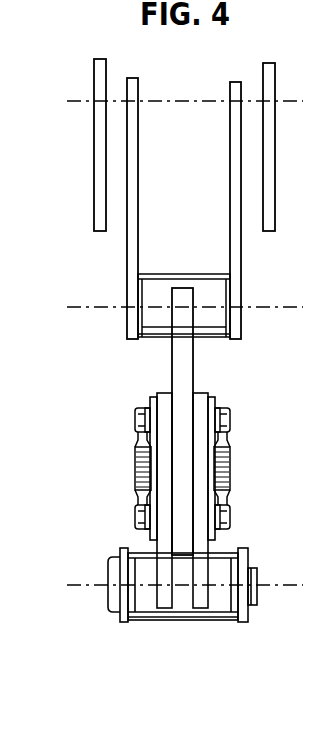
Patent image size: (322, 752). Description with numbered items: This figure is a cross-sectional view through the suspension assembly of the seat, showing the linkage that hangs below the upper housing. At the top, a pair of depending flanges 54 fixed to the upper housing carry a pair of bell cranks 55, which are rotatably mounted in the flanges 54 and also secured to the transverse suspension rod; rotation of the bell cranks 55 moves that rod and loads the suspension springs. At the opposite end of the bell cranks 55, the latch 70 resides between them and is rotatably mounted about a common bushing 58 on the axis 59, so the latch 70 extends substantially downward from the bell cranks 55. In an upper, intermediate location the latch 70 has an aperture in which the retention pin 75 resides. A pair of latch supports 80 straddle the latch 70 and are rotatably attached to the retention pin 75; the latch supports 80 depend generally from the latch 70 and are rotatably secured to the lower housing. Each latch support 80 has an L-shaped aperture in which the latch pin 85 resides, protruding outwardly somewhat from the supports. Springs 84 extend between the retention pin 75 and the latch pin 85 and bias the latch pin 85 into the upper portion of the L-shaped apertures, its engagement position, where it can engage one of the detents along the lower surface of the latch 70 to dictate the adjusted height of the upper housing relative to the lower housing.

The depending flanges 54 is at (95, 137).
The bell cranks 55 is at (230, 167).
The common bushing 58 is at (193, 282).
The axis 59 is at (78, 308).
The latch 70 is at (177, 364).
The retention pin 75 is at (137, 420).
The latch supports 80 is at (165, 410).
The springs 84 is at (138, 475).
The latch pin 85 is at (230, 513).